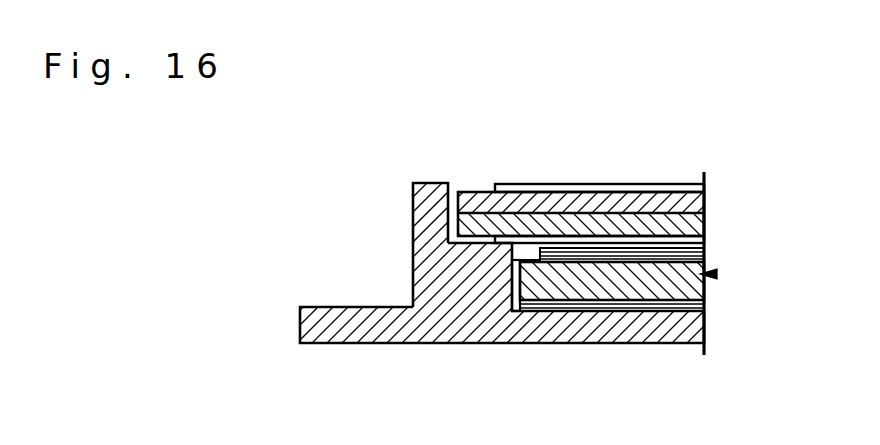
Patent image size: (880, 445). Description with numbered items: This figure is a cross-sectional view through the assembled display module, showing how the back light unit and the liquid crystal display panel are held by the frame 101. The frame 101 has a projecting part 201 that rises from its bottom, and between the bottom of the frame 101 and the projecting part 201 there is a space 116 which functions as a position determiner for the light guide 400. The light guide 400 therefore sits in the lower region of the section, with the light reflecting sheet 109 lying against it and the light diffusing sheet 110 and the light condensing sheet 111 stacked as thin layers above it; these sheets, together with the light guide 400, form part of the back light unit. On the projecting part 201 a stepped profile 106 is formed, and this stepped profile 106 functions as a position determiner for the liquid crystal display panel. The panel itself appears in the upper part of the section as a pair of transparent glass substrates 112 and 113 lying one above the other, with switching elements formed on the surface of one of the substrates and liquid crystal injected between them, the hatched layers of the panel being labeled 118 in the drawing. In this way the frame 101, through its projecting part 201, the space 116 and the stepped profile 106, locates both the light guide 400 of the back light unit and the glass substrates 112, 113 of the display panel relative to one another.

The frame 101 is at (451, 340).
The stepped profile 106 is at (433, 205).
The light reflecting sheet 109 is at (664, 300).
The light diffusing sheet 110 is at (705, 259).
The light condensing sheet 111 is at (705, 255).
The transparent glass substrate 112 is at (702, 195).
The transparent glass substrate 113 is at (692, 229).
The space 116 is at (513, 300).
The piezoelectric layers 118 is at (612, 237).
The projecting part 201 is at (518, 262).
The light guide 400 is at (704, 293).